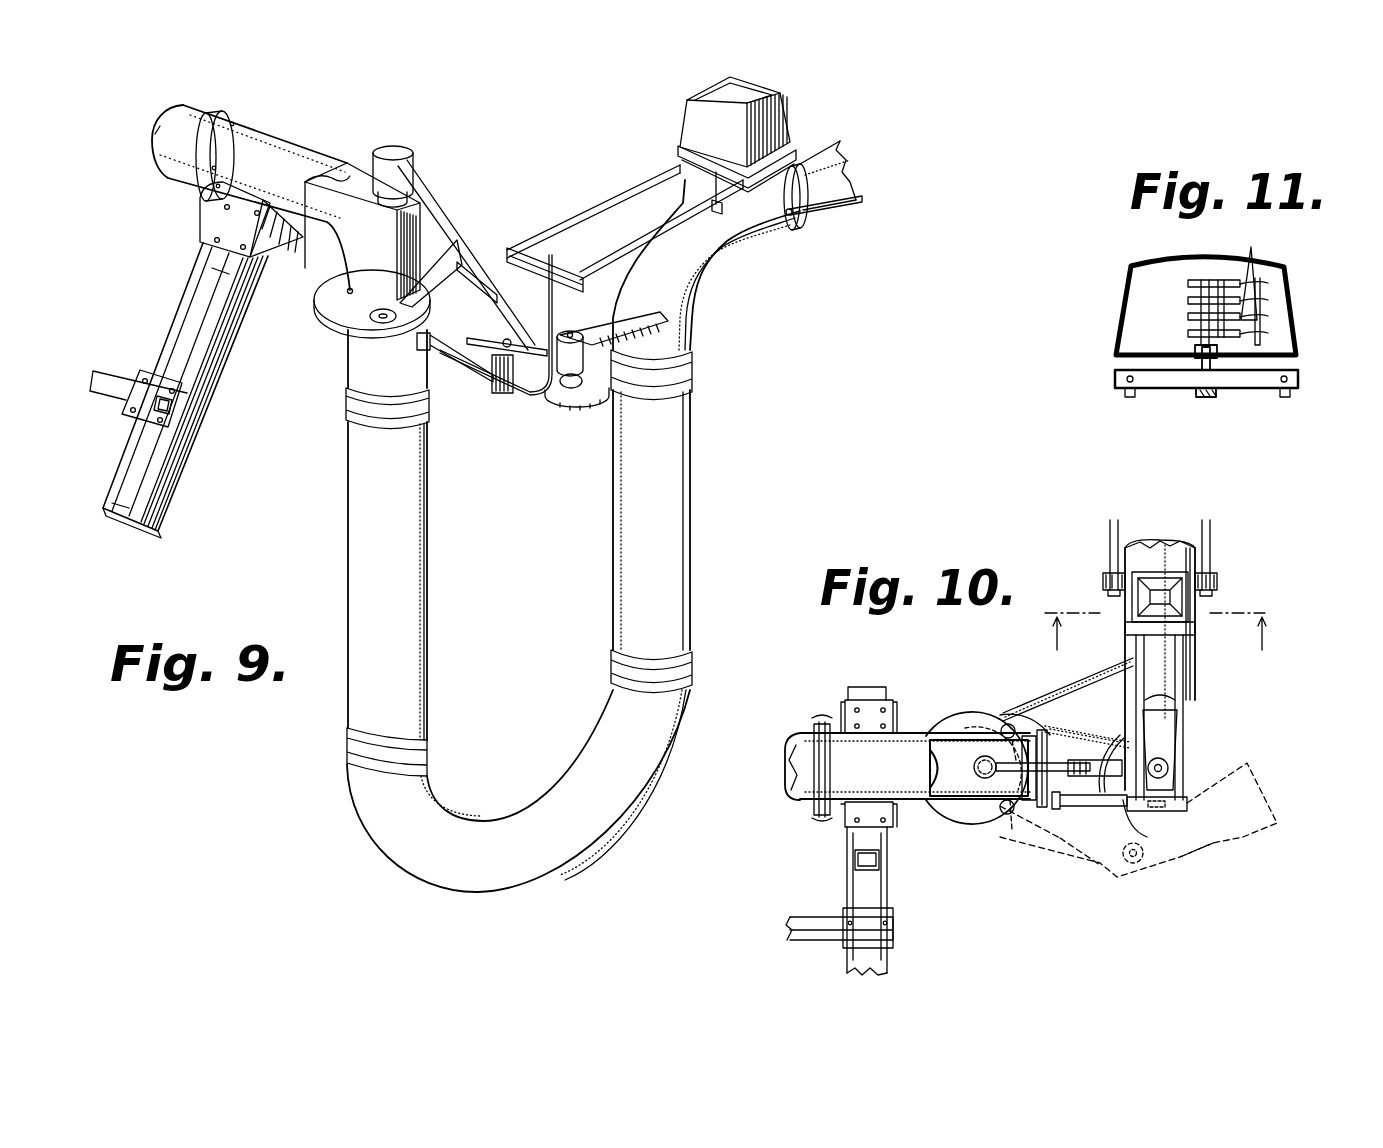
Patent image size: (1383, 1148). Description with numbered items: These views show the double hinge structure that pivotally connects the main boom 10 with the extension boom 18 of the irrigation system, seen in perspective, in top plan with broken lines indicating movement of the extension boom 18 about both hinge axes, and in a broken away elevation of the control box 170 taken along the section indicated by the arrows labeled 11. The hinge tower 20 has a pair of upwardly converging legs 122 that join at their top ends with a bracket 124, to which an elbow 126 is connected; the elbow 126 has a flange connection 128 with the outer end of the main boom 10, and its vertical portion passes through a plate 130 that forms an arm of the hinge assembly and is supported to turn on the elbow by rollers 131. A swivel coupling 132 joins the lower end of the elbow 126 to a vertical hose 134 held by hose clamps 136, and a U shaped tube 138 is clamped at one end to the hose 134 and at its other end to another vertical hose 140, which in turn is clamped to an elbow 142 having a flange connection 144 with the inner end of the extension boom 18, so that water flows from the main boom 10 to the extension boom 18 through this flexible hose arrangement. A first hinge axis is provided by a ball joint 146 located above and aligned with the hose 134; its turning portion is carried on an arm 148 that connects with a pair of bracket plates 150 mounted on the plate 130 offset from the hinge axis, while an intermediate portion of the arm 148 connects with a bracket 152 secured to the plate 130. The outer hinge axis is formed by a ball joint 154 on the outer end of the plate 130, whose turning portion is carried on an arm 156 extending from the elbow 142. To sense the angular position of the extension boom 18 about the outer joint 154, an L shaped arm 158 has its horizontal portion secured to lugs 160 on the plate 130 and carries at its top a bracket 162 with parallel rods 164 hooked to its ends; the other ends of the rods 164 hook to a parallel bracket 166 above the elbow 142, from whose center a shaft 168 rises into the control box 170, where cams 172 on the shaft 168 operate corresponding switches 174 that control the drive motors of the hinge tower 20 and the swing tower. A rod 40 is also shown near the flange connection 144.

In FIG. 9, the main boom 10 is at (176, 165).
In FIG. 10, the main boom 10 is at (788, 752).
In FIG. 9, the extension boom 18 is at (828, 150).
In FIG. 9, the hinge tower 20 is at (125, 355).
In FIG. 10, the hinge tower 20 is at (839, 928).
In FIG. 9, the rod 40 is at (860, 204).
In FIG. 10, the rod 40 is at (1110, 538).
In FIG. 9, the legs 122 is at (180, 465).
In FIG. 10, the legs 122 is at (866, 690).
In FIG. 9, the bracket 124 is at (280, 242).
In FIG. 10, the bracket 124 is at (843, 702).
In FIG. 9, the elbow 126 is at (290, 152).
In FIG. 10, the elbow 126 is at (905, 733).
In FIG. 9, the flange connection 128 is at (210, 196).
In FIG. 10, the flange connection 128 is at (812, 812).
In FIG. 9, the plate 130 is at (318, 306).
In FIG. 10, the plate 130 is at (1000, 830).
In FIG. 9, the rollers 131 is at (385, 325).
In FIG. 10, the rollers 131 is at (1014, 830).
In FIG. 9, the swivel coupling 132 is at (348, 345).
In FIG. 9, the vertical hose 134 is at (346, 574).
In FIG. 9, the hose clamps 136 is at (348, 405).
In FIG. 9, the U shaped tube 138 is at (505, 812).
In FIG. 10, the U shaped tube 138 is at (1045, 698).
In FIG. 9, the vertical hose 140 is at (611, 560).
In FIG. 9, the elbow 142 is at (698, 300).
In FIG. 10, the elbow 142 is at (1196, 688).
In FIG. 9, the flange connection 144 is at (790, 236).
In FIG. 10, the flange connection 144 is at (1210, 576).
In FIG. 9, the ball joint 146 is at (400, 148).
In FIG. 10, the ball joint 146 is at (930, 762).
In FIG. 9, the arm 148 is at (455, 216).
In FIG. 10, the arm 148 is at (1058, 762).
In FIG. 9, the bracket plates 150 is at (536, 310).
In FIG. 10, the bracket plates 150 is at (1120, 732).
In FIG. 9, the bracket 152 is at (410, 282).
In FIG. 10, the bracket 152 is at (1018, 712).
In FIG. 9, the ball joint 154 is at (584, 405).
In FIG. 10, the ball joint 154 is at (1170, 762).
In FIG. 9, the arm 156 is at (626, 310).
In FIG. 10, the arm 156 is at (1175, 736).
In FIG. 9, the L shaped arm 158 is at (580, 314).
In FIG. 10, the L shaped arm 158 is at (1094, 808).
In FIG. 9, the lugs 160 is at (438, 336).
In FIG. 10, the lugs 160 is at (1040, 808).
In FIG. 9, the bracket 162 is at (556, 262).
In FIG. 10, the bracket 162 is at (1186, 808).
In FIG. 9, the rods 164 is at (665, 228).
In FIG. 10, the rods 164 is at (1184, 668).
In FIG. 11, the rods 164 is at (1118, 376).
In FIG. 9, the bracket 166 is at (672, 175).
In FIG. 10, the bracket 166 is at (1128, 630).
In FIG. 11, the bracket 166 is at (1246, 394).
In FIG. 9, the shaft 168 is at (728, 218).
In FIG. 11, the shaft 168 is at (1192, 394).
In FIG. 9, the control box 170 is at (793, 112).
In FIG. 10, the control box 170 is at (1192, 626).
In FIG. 11, the control box 170 is at (1290, 266).
In FIG. 11, the cams 172 is at (1188, 335).
In FIG. 11, the switches 174 is at (1258, 273).
In FIG. 10, the section line 11- 11 is at (1163, 619).